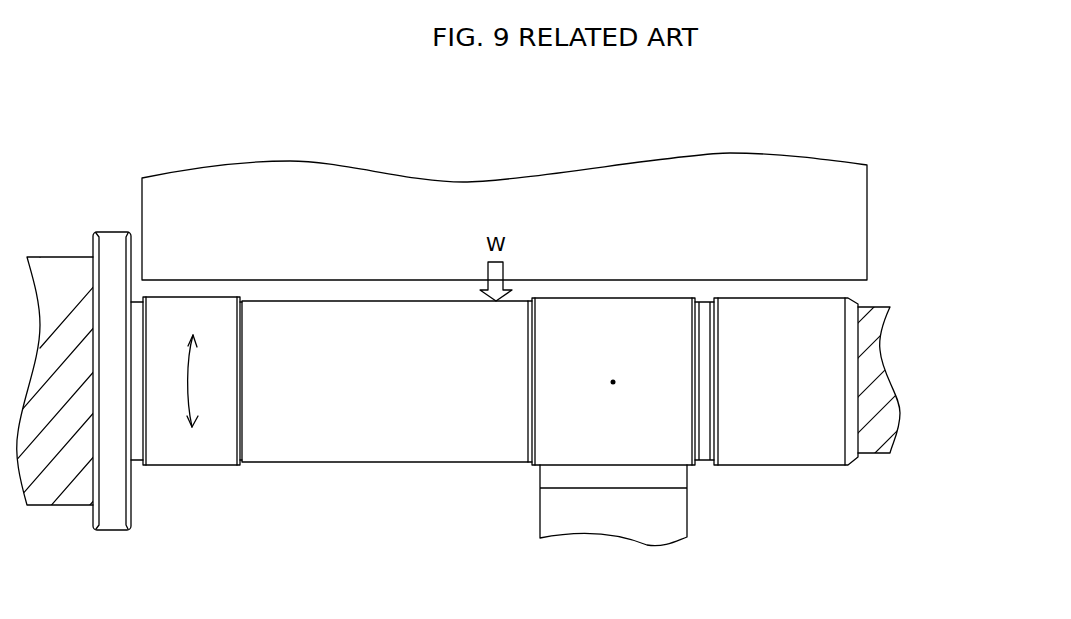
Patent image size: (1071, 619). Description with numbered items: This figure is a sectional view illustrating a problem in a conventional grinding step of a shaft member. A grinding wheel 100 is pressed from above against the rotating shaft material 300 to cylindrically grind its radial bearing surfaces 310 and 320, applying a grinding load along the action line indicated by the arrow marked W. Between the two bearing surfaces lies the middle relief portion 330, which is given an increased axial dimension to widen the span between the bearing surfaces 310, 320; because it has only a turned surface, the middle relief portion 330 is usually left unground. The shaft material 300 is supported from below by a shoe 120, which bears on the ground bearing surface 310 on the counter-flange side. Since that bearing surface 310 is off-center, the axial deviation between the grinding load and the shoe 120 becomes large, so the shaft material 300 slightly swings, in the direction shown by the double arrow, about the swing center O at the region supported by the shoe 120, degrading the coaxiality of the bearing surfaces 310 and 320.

The grinding wheel 100 is at (868, 212).
The shaft material 300 is at (494, 388).
The radial bearing surface 310 is at (625, 297).
The radial bearing surface 320 is at (193, 466).
The middle relief portion 330 is at (341, 463).
The shoe 120 is at (540, 513).
The swing center O is at (616, 382).